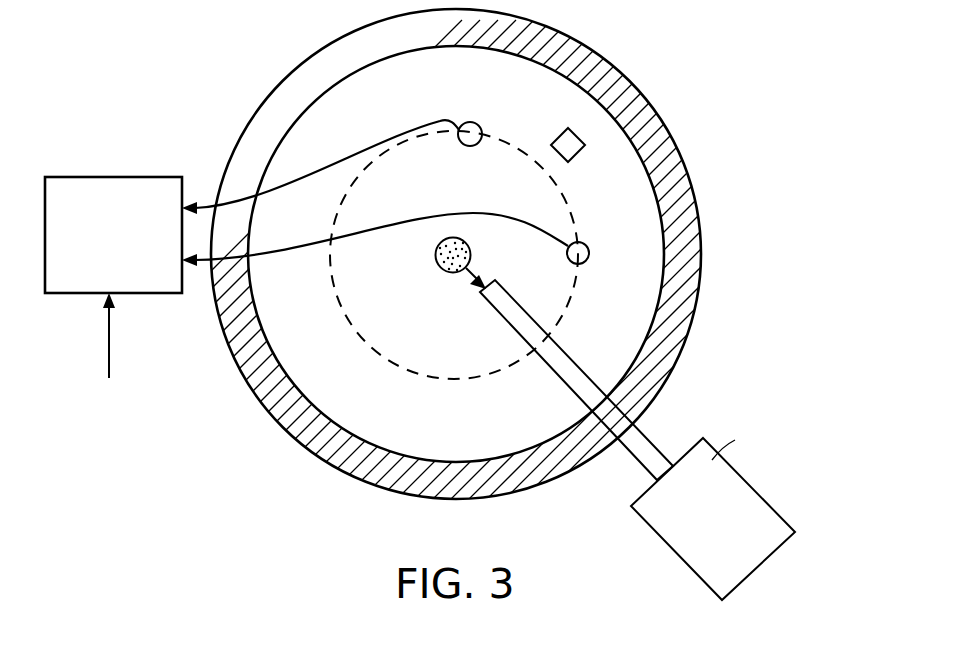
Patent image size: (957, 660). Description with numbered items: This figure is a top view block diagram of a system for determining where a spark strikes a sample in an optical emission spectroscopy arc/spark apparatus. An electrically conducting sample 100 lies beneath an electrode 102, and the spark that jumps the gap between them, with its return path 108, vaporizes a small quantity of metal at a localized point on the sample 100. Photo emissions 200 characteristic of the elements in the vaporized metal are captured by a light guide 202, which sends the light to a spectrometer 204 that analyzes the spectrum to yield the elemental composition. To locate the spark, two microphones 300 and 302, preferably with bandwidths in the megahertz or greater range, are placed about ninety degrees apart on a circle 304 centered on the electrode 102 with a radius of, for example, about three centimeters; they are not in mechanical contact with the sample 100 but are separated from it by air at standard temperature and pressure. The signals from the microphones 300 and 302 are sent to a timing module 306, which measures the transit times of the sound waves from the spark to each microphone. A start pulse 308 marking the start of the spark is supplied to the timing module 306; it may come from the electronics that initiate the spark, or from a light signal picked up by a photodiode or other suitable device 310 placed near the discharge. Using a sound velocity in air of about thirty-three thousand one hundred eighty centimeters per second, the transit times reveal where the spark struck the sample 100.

The sample 100 is at (415, 419).
The electrode 102 is at (434, 254).
The return path 108 is at (702, 212).
The photo emissions 200 is at (472, 270).
The light guide 202 is at (572, 390).
The spectrometer 204 is at (655, 530).
The microphone 300 is at (585, 262).
The microphone 302 is at (470, 122).
The circle 304 is at (560, 188).
The timing module 306 is at (92, 276).
The start pulse 308 is at (112, 381).
The photodiode 310 is at (556, 138).